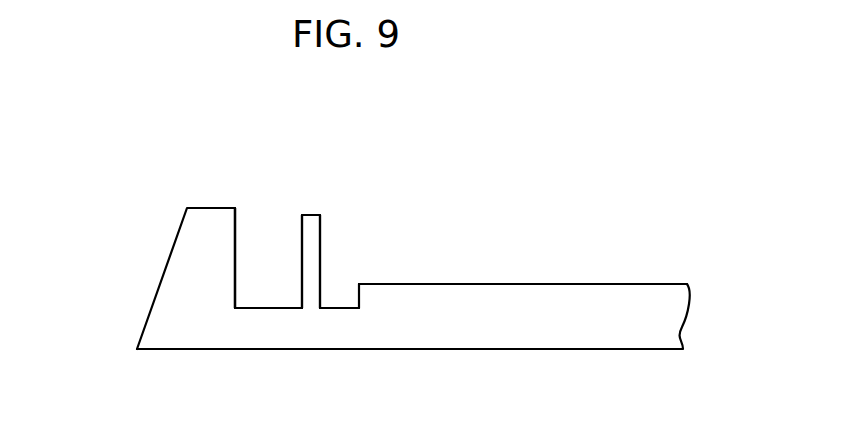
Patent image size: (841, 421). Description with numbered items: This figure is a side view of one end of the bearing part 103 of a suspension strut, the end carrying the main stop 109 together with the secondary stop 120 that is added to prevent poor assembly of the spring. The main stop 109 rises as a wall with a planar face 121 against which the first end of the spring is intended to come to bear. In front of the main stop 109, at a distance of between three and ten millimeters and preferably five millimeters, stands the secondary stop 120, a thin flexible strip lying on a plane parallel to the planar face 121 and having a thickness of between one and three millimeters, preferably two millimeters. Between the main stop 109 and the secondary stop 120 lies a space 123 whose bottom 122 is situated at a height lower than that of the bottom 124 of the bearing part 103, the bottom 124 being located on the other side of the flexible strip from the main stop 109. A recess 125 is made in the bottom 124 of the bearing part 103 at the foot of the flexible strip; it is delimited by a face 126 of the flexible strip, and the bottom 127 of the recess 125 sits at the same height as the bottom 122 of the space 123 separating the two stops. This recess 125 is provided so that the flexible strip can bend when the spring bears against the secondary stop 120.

The bearing part 103 is at (596, 283).
The main stop 109 is at (210, 247).
The secondary stop 120 is at (312, 230).
The planar face 121 is at (233, 272).
The bottom of the space 122 is at (253, 308).
The space 123 is at (263, 267).
The bottom of the bearing part 124 is at (522, 284).
The recess 125 is at (343, 297).
The face of the flexible strip 126 is at (320, 262).
The bottom of the recess 127 is at (332, 308).